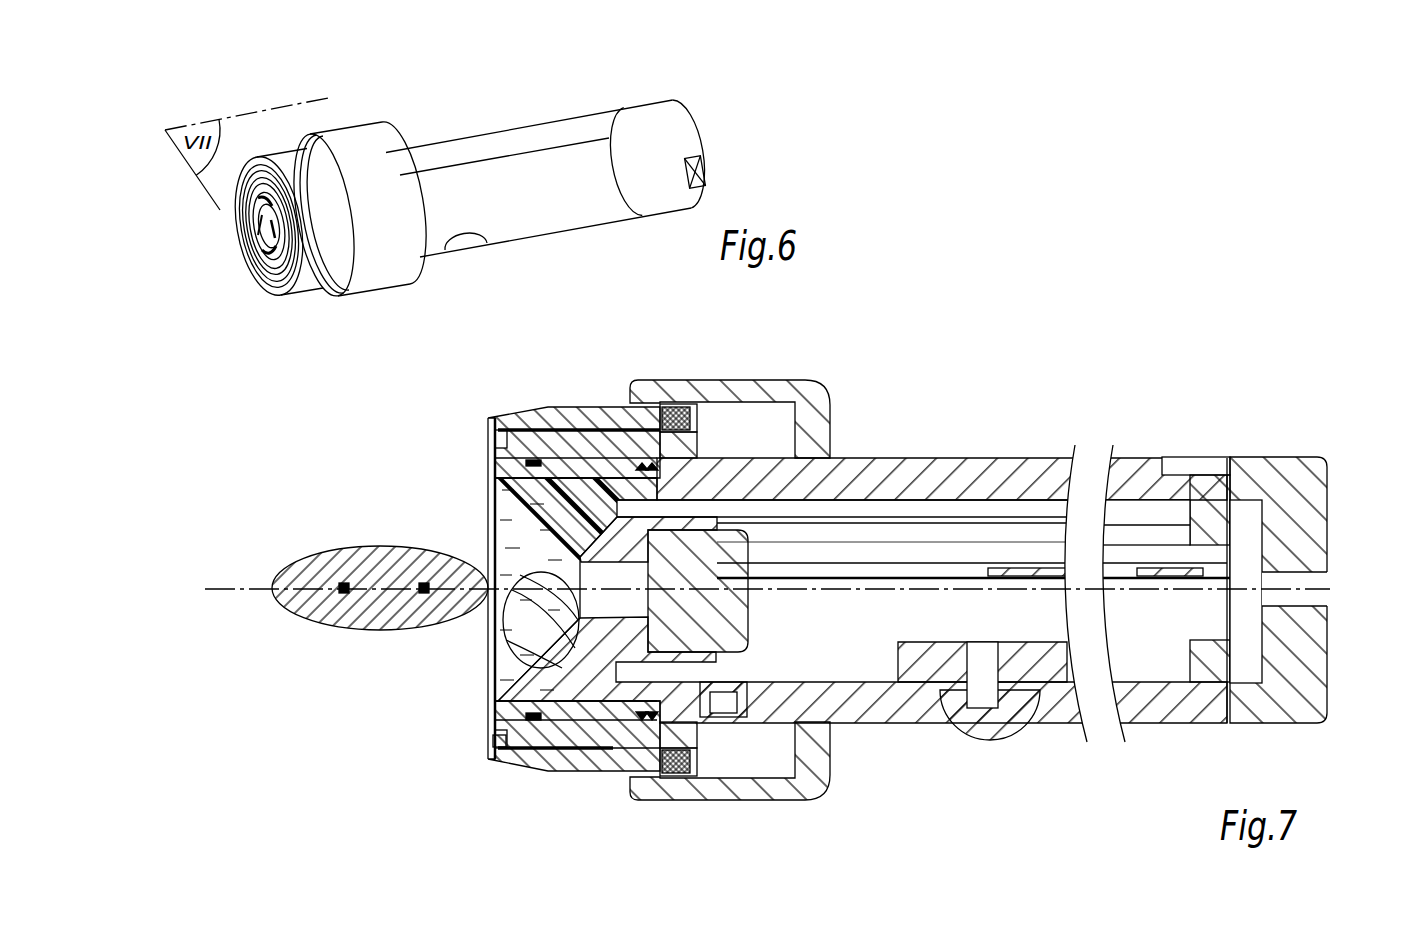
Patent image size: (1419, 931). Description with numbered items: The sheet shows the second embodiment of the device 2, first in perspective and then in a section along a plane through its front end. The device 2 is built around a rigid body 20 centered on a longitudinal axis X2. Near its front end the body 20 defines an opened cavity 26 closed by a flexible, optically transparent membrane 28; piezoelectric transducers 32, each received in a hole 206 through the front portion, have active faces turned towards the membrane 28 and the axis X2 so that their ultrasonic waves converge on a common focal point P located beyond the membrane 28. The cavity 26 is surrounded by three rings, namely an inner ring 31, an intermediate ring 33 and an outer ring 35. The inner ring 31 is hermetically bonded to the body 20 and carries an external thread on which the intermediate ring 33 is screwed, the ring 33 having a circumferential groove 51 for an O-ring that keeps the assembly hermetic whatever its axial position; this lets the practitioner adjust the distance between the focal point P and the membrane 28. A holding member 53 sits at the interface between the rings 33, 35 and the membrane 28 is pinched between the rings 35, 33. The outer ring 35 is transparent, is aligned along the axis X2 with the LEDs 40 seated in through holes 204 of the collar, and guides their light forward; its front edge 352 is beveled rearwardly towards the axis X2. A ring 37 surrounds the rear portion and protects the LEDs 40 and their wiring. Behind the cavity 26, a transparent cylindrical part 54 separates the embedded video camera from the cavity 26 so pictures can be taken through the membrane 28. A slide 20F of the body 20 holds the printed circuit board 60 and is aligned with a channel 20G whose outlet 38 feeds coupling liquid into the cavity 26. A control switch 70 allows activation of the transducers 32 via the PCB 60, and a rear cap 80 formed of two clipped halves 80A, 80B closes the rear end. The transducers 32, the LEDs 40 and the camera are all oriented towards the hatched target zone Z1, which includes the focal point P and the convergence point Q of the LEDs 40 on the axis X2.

In FIG. 6, the device 2 is at (596, 57).
In FIG. 7, the device 2 is at (1023, 350).
In FIG. 6, the rigid body 20 is at (472, 147).
In FIG. 6, the slide 20F is at (588, 200).
In FIG. 7, the slide 20F is at (1133, 518).
In FIG. 7, the channel 20G is at (725, 502).
In FIG. 7, the cavity 26 is at (503, 667).
In FIG. 6, the flexible membrane 28 is at (263, 233).
In FIG. 7, the flexible membrane 28 is at (485, 620).
In FIG. 7, the inner ring 31 is at (527, 458).
In FIG. 7, the piezoelectric ceramic transducer 32 is at (562, 450).
In FIG. 7, the intermediate ring 33 is at (553, 443).
In FIG. 6, the outer ring 35 is at (307, 280).
In FIG. 7, the outer ring 35 is at (568, 417).
In FIG. 6, the ring 37 is at (377, 273).
In FIG. 7, the ring 37 is at (780, 795).
In FIG. 7, the outlet 38 is at (608, 511).
In FIG. 7, the LED 40 is at (678, 418).
In FIG. 7, the circumferential groove 51 is at (534, 722).
In FIG. 7, the holding member 53 is at (498, 759).
In FIG. 7, the transparent part 54 is at (627, 603).
In FIG. 7, the printed circuit board 60 is at (1178, 592).
In FIG. 6, the control switch 70 is at (462, 238).
In FIG. 7, the control switch 70 is at (988, 724).
In FIG. 6, the rear cap 80 is at (800, 106).
In FIG. 7, the rear cap 80 is at (1305, 648).
In FIG. 6, the first half of rear cap 80A is at (672, 117).
In FIG. 6, the second half of rear cap 80B is at (675, 148).
In FIG. 7, the through hole 204 is at (707, 418).
In FIG. 7, the hole 206 is at (643, 467).
In FIG. 7, the front edge of outer ring 352 is at (485, 747).
In FIG. 7, the longitudinal axis X2 is at (1333, 589).
In FIG. 7, the target zone Z1 is at (377, 595).
In FIG. 7, the convergence point Q is at (344, 575).
In FIG. 7, the focal point P is at (424, 575).